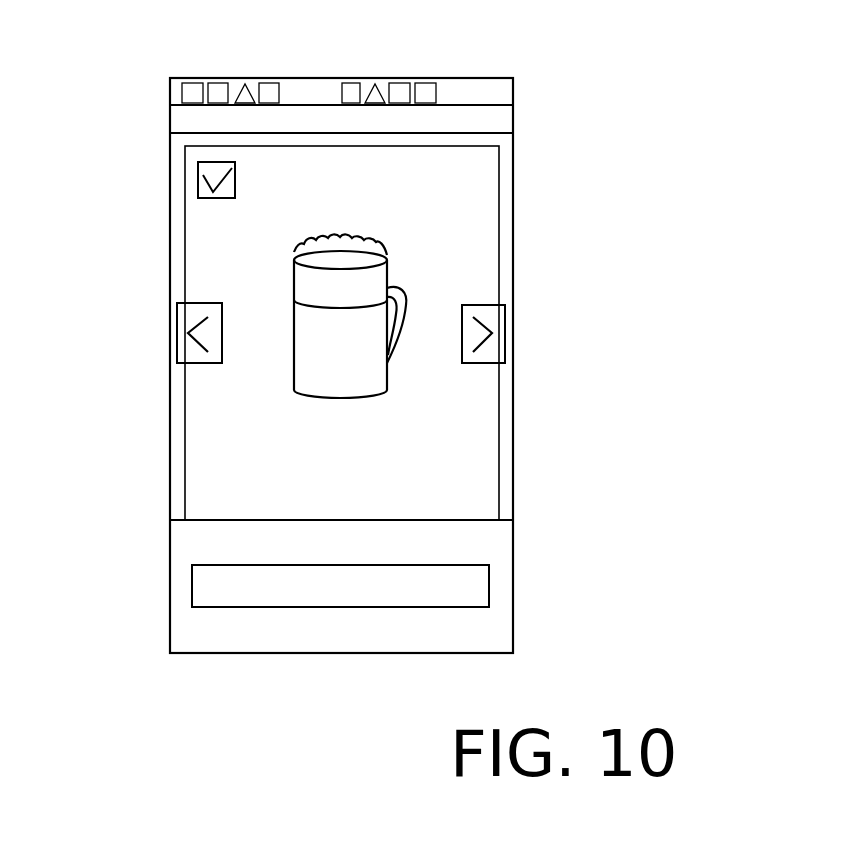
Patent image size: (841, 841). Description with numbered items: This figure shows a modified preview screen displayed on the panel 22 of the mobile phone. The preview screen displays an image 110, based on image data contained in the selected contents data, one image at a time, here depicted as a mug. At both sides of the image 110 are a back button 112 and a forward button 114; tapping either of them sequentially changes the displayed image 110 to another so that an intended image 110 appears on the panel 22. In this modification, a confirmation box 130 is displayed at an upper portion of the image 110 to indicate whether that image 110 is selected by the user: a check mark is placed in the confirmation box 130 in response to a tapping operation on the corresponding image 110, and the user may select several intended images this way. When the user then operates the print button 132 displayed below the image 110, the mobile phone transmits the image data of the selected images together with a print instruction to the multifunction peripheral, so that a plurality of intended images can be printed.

The panel 22 is at (429, 61).
The image 110 is at (499, 185).
The back button 112 is at (197, 303).
The forward button 114 is at (487, 305).
The confirmation box 130 is at (198, 180).
The print button 132 is at (489, 578).